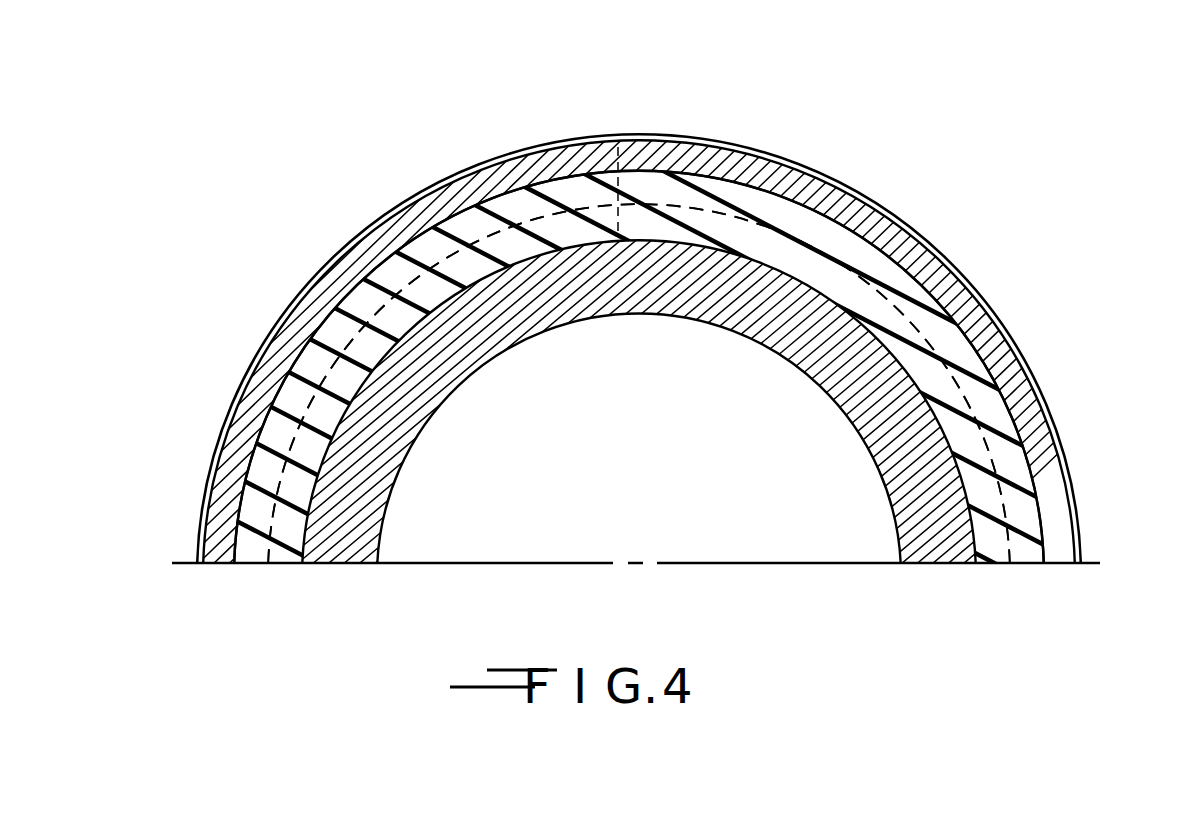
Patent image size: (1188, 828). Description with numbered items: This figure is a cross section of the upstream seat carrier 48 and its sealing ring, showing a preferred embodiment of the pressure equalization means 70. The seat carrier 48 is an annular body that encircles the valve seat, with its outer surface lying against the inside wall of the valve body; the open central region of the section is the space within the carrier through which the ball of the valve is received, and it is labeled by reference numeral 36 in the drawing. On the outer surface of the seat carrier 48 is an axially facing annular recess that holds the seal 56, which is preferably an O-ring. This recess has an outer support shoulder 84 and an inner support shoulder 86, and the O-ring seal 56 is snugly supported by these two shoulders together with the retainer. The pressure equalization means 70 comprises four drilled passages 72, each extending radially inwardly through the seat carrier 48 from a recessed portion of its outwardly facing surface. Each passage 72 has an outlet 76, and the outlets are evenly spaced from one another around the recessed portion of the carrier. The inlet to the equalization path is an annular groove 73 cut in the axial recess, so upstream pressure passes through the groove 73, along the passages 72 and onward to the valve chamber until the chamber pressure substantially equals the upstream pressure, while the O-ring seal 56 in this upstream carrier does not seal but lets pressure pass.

The bore / interior passage 36 is at (660, 475).
The upstream seat carrier 48 is at (962, 262).
The seal 56 is at (797, 238).
The pressure equalization means 70 is at (621, 133).
The drilled passage 72 is at (639, 222).
The annular groove 73 is at (383, 262).
The outlet 76 is at (664, 140).
The outer support shoulder 84 is at (543, 182).
The inner support shoulder 86 is at (558, 247).